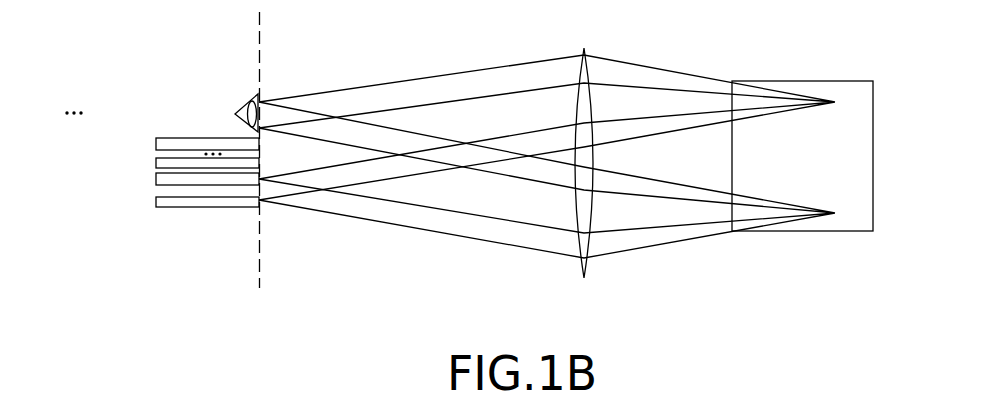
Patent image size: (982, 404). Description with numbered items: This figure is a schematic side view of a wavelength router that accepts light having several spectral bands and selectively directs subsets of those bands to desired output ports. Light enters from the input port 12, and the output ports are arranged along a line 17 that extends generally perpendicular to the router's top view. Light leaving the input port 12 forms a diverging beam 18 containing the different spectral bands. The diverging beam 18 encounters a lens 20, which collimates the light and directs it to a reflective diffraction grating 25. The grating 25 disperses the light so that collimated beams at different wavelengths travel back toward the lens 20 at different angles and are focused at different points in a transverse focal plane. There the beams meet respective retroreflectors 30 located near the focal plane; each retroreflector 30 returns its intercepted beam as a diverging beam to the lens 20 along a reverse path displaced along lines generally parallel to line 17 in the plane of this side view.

The input port 12 is at (188, 182).
The line 17 is at (258, 267).
The diverging beam 18 is at (290, 198).
The lens 20 is at (585, 278).
The reflective diffraction grating 25 is at (820, 81).
The retroreflector 30 is at (247, 108).